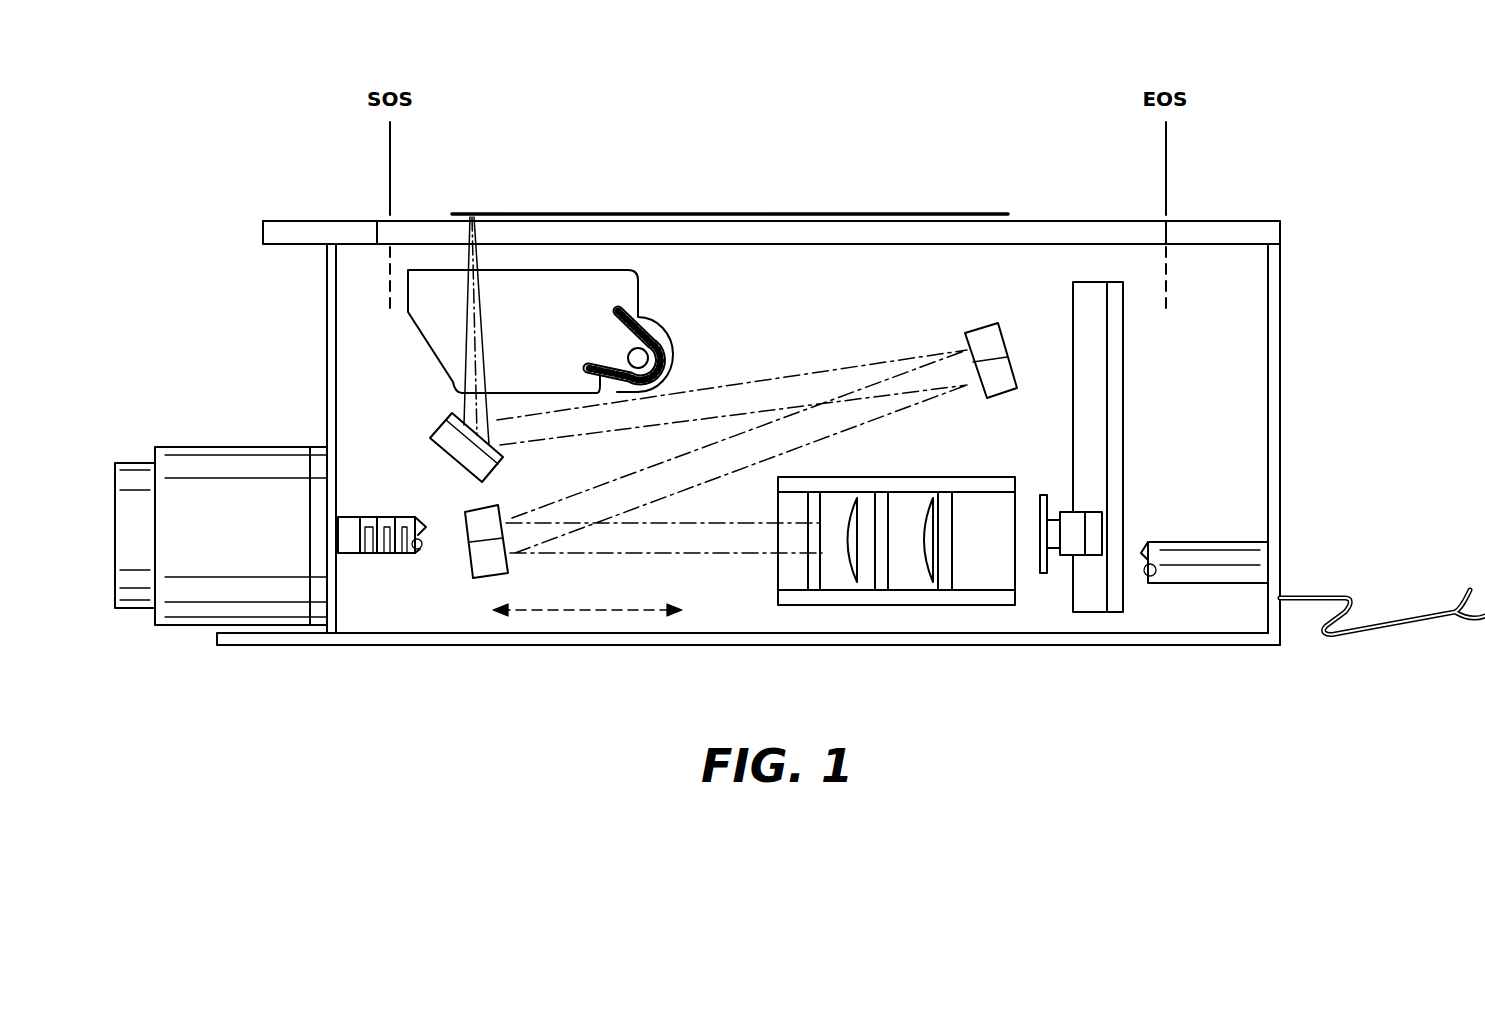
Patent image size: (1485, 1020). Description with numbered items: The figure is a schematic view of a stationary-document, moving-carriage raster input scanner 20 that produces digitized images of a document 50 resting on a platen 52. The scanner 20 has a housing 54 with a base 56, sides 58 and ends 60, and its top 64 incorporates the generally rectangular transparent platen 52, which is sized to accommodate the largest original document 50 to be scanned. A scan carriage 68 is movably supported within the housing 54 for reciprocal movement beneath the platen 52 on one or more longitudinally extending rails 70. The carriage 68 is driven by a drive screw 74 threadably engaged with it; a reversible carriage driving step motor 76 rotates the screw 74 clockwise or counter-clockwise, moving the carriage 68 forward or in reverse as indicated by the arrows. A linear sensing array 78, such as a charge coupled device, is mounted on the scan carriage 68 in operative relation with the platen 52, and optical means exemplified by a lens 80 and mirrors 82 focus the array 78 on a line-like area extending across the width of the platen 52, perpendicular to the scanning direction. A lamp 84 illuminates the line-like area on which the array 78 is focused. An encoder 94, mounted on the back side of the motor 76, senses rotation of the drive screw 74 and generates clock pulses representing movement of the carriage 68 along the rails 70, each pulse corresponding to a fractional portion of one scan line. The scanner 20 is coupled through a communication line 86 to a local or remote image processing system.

The scanner 20 is at (617, 183).
The document 50 is at (918, 222).
The platen 52 is at (425, 228).
The housing 54 is at (316, 300).
The base 56 is at (418, 645).
The sides 58 is at (1220, 263).
The ends 60 is at (325, 350).
The top 64 is at (298, 232).
The scan carriage 68 is at (1053, 604).
The rails 70 is at (1220, 560).
The drive screw 74 is at (378, 517).
The carriage driving step motor 76 is at (228, 460).
The linear sensing array 78 is at (1065, 510).
The lens 80 is at (907, 580).
The mirrors 82 is at (482, 527).
The lamp 84 is at (640, 328).
The communication line 86 is at (1365, 635).
The encoder 94 is at (138, 475).